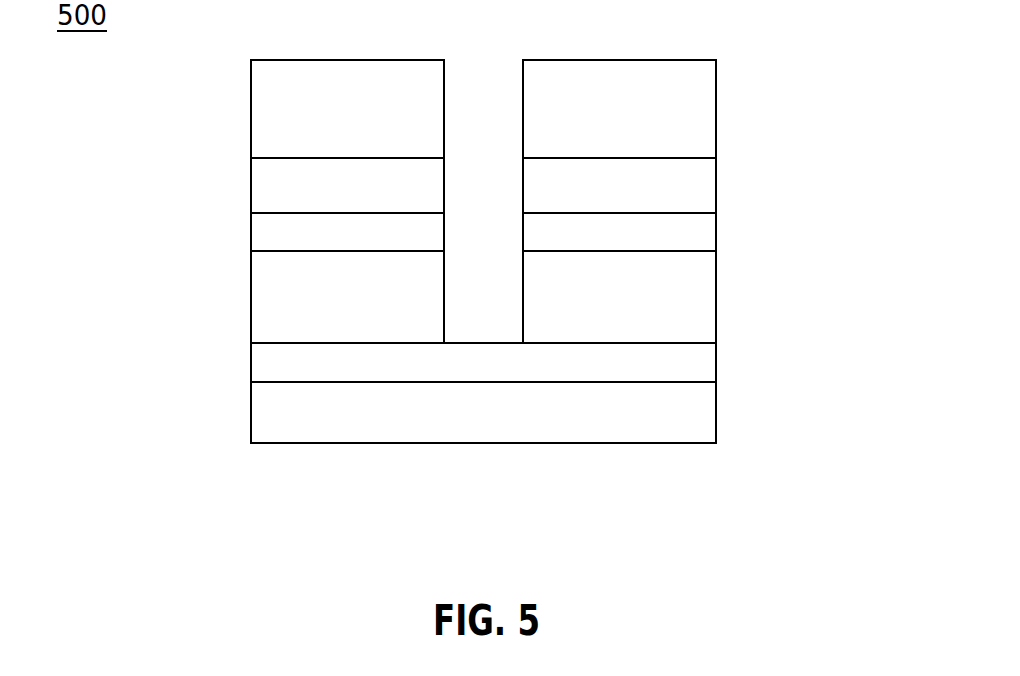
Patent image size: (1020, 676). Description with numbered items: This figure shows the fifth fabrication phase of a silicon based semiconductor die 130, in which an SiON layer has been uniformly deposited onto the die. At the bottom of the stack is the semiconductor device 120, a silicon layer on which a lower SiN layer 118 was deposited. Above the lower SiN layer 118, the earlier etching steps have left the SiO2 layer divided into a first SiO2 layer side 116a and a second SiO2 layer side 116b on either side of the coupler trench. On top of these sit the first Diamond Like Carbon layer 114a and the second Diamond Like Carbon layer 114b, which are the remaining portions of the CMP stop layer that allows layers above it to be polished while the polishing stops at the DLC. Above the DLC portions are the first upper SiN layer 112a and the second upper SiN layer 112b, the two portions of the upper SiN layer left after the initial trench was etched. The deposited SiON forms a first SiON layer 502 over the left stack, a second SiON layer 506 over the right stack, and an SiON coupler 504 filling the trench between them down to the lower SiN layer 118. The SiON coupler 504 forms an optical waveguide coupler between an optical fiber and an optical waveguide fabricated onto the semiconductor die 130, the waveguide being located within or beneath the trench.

The first SiON layer 502 is at (251, 112).
The SiON coupler 504 is at (479, 160).
The second SiON layer 506 is at (716, 110).
The first upper SiN layer 112a is at (251, 188).
The second upper SiN layer 112b is at (716, 187).
The first Diamond Like Carbon (DLC) layer 114a is at (251, 237).
The second Diamond Like Carbon (DLC) layer 114b is at (716, 237).
The first SiO2 layer side 116a is at (251, 300).
The second SiO2 layer side 116b is at (716, 302).
The lower SiN layer 118 is at (251, 361).
The semiconductor device 120 is at (251, 419).
The silicon based semiconductor die 130 is at (480, 467).